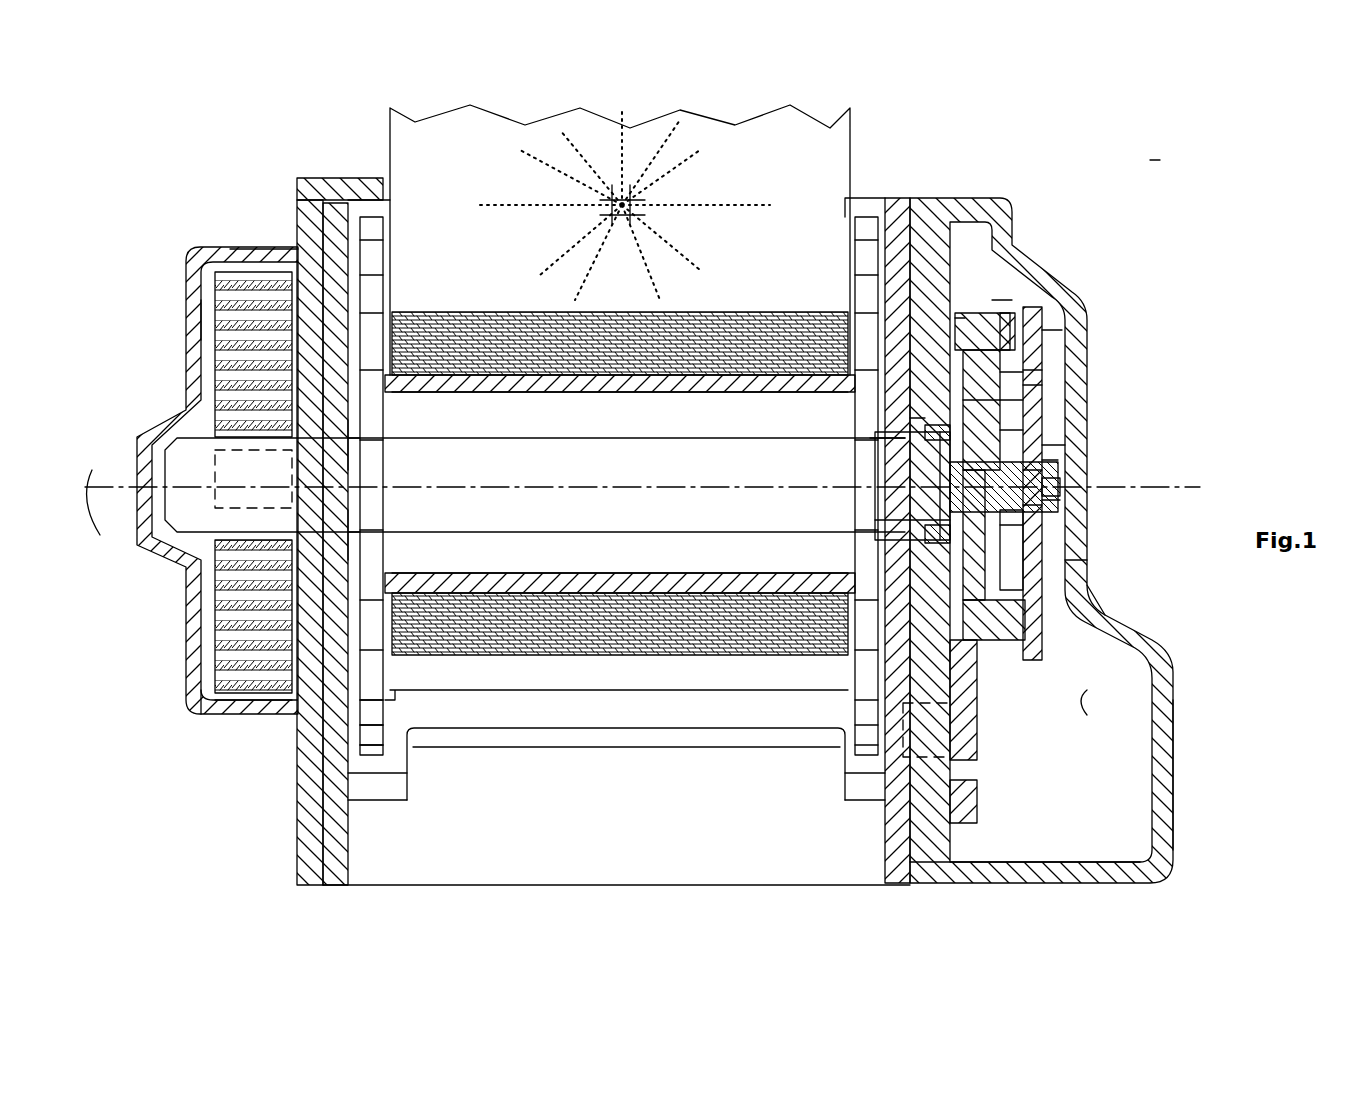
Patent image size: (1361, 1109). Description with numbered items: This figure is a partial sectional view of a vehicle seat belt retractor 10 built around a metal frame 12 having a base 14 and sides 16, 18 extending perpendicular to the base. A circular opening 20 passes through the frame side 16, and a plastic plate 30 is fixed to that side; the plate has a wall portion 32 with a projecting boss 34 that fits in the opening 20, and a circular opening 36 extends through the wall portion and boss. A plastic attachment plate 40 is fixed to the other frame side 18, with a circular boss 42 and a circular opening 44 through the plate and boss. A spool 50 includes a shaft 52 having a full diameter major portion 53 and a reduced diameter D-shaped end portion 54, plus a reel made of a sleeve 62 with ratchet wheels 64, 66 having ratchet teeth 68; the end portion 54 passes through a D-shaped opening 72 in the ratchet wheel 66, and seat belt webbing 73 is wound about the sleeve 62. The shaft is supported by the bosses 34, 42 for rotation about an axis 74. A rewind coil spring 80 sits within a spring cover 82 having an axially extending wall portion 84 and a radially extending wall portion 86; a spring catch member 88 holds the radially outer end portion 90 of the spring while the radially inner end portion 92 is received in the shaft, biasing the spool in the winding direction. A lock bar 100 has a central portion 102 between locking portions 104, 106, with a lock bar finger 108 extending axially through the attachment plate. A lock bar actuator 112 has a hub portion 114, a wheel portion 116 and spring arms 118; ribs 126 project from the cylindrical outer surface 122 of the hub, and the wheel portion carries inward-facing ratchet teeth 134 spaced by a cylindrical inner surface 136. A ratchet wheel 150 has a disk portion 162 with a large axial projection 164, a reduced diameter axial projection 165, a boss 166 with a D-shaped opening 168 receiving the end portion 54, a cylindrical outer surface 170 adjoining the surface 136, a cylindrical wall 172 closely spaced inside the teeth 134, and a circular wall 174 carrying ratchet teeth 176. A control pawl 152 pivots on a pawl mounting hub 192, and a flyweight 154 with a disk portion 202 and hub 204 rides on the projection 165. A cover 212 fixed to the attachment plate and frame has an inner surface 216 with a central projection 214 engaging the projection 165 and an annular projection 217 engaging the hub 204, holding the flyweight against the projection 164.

The vehicle seat belt retractor 10 is at (1178, 140).
The frame 12 is at (608, 887).
The base 14 is at (720, 860).
The frame side 16 is at (338, 218).
The frame side 18 is at (898, 218).
The circular opening 20 is at (372, 445).
The plastic plate 30 is at (304, 176).
The wall portion 32 is at (312, 222).
The projecting boss 34 is at (335, 432).
The circular opening 36 is at (342, 546).
The plastic attachment plate 40 is at (958, 204).
The circular boss 42 is at (880, 528).
The circular opening 44 is at (878, 478).
The spool 50 is at (700, 662).
The shaft 52 is at (566, 505).
The major portion 53 is at (472, 532).
The end portion 54 is at (900, 470).
The sleeve 62 is at (752, 586).
The ratchet wheel 64 is at (372, 226).
The ratchet wheel 66 is at (866, 262).
The ratchet teeth 68 is at (378, 745).
The D-shaped opening 72 is at (870, 440).
The seat belt webbing 73 is at (605, 150).
The axis 74 is at (96, 511).
The rewind coil spring 80 is at (238, 330).
The spring cover 82 is at (183, 268).
The axially extending wall portion 84 is at (258, 250).
The radially extending wall portion 86 is at (196, 318).
The spring catch member 88 is at (210, 702).
The radially outer end portion 90 is at (255, 727).
The radially inner end portion 92 is at (215, 455).
The lock bar 100 is at (572, 750).
The central portion 102 is at (620, 705).
The locking portion 104 is at (370, 785).
The locking portion 106 is at (862, 790).
The lock bar finger 108 is at (960, 836).
The lock bar actuator 112 is at (982, 310).
The hub portion 114 is at (950, 425).
The wheel portion 116 is at (1012, 332).
The spring arms 118 is at (965, 350).
The cylindrical outer surface 122 is at (962, 372).
The ribs 126 is at (900, 418).
The ratchet teeth 134 is at (980, 700).
The cylindrical inner surface 136 is at (955, 318).
The ratchet wheel 150 is at (1046, 362).
The control pawl 152 is at (1045, 432).
The flyweight 154 is at (1042, 540).
The disk portion 162 is at (1042, 560).
The axial projection 164 is at (1062, 446).
The reduced diameter axial projection 165 is at (1046, 462).
The boss 166 is at (920, 530).
The D-shaped opening 168 is at (960, 500).
The cylindrical outer surface 170 is at (1010, 300).
The cylindrical wall 172 is at (1045, 372).
The circular wall 174 is at (1046, 334).
The ratchet teeth 176 is at (1035, 660).
The pawl mounting hub 192 is at (1045, 400).
The disk portion 202 is at (1062, 590).
The hub 204 is at (1046, 525).
The cover 212 is at (1178, 850).
The central projection 214 is at (1062, 486).
The inner surface 216 is at (1140, 712).
The annular projection 217 is at (1046, 500).